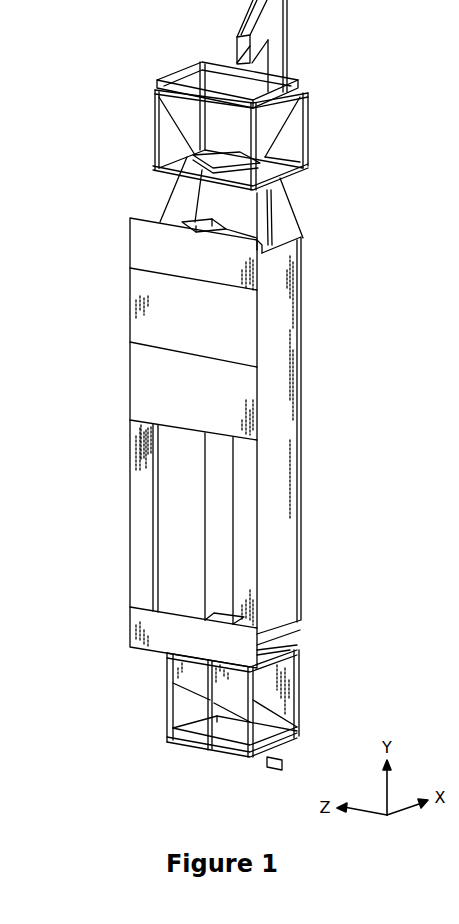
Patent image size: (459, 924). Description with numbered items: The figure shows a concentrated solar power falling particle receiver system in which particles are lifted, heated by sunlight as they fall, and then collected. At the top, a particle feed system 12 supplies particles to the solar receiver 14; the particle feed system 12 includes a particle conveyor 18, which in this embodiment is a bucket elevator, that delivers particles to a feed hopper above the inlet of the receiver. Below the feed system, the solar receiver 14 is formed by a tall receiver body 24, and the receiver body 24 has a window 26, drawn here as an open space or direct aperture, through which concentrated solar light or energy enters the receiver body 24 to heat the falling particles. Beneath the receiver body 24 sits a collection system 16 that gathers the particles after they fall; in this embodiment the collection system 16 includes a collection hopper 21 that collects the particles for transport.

The particle feed system 12 is at (157, 72).
The solar receiver 14 is at (308, 263).
The collection system 16 is at (312, 660).
The particle conveyor 18 is at (287, 2).
The collection hopper 21 is at (300, 725).
The receiver body 24 is at (297, 370).
The window 26 is at (235, 527).